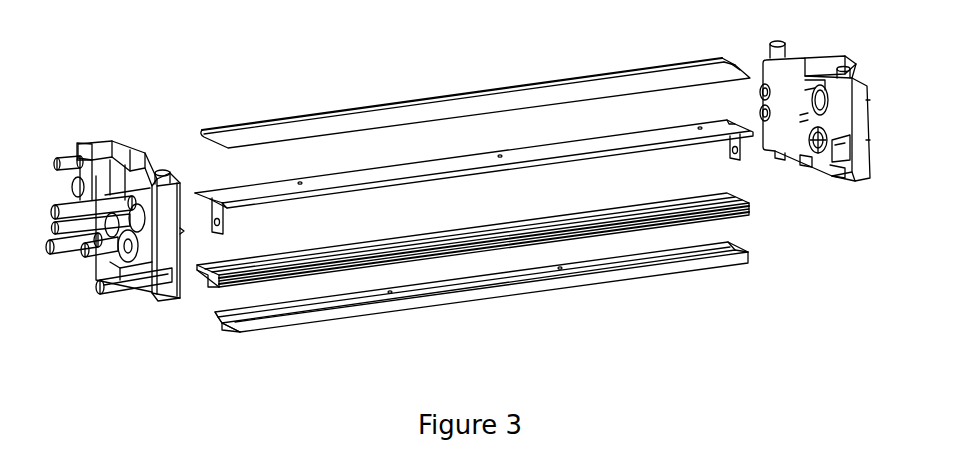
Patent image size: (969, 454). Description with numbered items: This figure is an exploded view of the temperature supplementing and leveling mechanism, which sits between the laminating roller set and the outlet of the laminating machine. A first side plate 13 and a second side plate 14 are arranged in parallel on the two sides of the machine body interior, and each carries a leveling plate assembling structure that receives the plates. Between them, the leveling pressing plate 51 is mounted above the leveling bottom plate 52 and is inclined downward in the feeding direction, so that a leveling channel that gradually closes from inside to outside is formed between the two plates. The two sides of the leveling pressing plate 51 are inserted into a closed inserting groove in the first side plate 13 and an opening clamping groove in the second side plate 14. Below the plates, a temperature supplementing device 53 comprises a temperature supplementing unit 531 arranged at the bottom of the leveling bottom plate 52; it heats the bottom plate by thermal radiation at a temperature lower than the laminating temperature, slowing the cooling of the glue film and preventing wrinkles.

The first side plate 13 is at (128, 152).
The second side plate 14 is at (825, 60).
The leveling pressing plate 51 is at (530, 97).
The leveling bottom plate 52 is at (608, 147).
The temperature supplementing unit 531 is at (573, 222).
The temperature supplementing device 53 is at (623, 277).